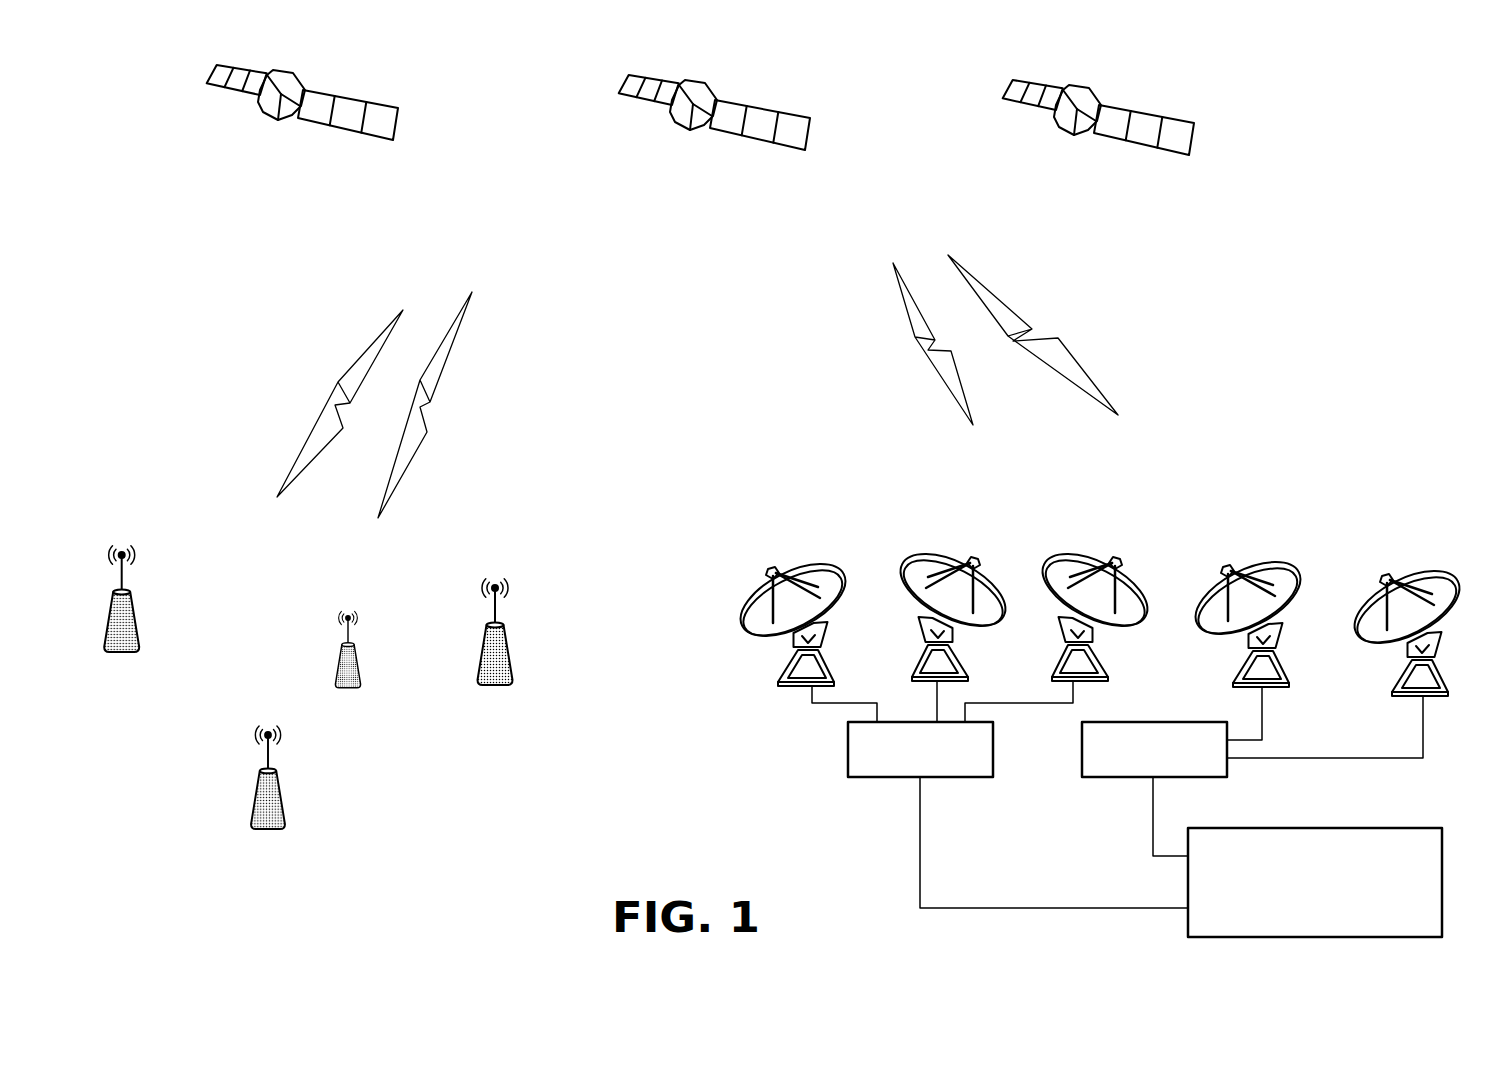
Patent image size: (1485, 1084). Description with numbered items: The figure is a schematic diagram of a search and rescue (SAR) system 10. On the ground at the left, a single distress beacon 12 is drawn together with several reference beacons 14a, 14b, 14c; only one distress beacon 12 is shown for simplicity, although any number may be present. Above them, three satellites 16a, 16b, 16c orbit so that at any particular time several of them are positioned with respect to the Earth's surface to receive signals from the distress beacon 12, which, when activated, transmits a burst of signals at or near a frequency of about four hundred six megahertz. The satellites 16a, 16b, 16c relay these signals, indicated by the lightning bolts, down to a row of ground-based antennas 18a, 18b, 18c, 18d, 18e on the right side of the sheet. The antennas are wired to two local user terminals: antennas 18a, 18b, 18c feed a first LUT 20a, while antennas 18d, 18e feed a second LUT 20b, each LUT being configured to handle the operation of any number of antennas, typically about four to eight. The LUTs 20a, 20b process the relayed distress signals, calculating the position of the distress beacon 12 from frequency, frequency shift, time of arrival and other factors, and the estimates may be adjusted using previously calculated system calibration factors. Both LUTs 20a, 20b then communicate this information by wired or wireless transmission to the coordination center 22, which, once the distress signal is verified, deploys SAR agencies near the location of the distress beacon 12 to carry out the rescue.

The search and rescue (SAR) system 10 is at (1310, 288).
The distress beacon 12 is at (347, 690).
The reference beacon 14a is at (133, 655).
The reference beacon 14b is at (257, 830).
The reference beacon 14c is at (507, 687).
The satellite 16a is at (228, 93).
The satellite 16b is at (625, 98).
The satellite 16c is at (1163, 113).
The antenna 18a is at (818, 565).
The antenna 18b is at (930, 558).
The antenna 18c is at (1070, 560).
The antenna 18d is at (1300, 562).
The antenna 18e is at (1436, 567).
The local user terminal (LUT) 20a is at (885, 780).
The local user terminal (LUT) 20b is at (1118, 779).
The coordination center 22 is at (1307, 828).